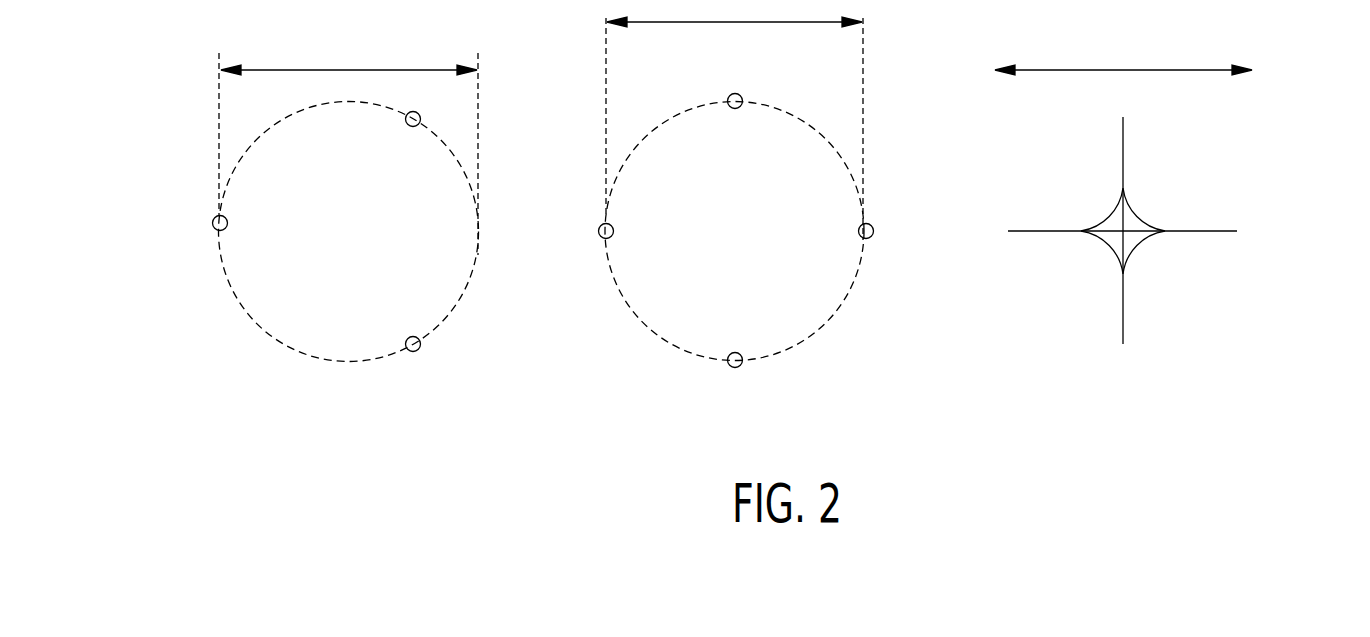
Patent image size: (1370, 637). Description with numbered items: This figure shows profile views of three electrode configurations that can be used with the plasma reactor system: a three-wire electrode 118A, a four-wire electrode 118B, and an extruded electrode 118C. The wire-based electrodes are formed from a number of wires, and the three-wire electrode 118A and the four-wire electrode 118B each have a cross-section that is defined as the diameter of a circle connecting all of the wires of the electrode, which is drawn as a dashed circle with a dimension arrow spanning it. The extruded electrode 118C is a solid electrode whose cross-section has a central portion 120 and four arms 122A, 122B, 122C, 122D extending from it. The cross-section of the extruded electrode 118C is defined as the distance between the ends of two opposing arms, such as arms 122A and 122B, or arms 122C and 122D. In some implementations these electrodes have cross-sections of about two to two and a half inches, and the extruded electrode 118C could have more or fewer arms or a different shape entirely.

The 3-wire electrode 118A is at (169, 177).
The 4-wire electrode 118B is at (591, 326).
The extruded electrode 118C is at (1164, 204).
The central portion 120 is at (1133, 207).
The arm 122A is at (1121, 130).
The arm 122B is at (1125, 305).
The arm 122C is at (1228, 228).
The arm 122D is at (1018, 228).